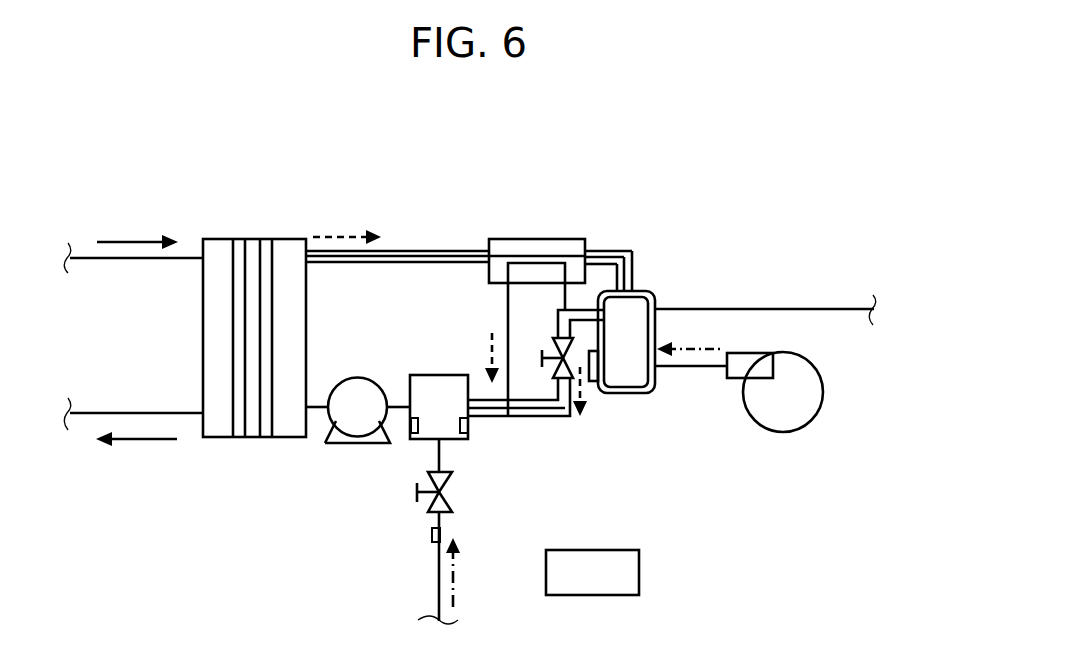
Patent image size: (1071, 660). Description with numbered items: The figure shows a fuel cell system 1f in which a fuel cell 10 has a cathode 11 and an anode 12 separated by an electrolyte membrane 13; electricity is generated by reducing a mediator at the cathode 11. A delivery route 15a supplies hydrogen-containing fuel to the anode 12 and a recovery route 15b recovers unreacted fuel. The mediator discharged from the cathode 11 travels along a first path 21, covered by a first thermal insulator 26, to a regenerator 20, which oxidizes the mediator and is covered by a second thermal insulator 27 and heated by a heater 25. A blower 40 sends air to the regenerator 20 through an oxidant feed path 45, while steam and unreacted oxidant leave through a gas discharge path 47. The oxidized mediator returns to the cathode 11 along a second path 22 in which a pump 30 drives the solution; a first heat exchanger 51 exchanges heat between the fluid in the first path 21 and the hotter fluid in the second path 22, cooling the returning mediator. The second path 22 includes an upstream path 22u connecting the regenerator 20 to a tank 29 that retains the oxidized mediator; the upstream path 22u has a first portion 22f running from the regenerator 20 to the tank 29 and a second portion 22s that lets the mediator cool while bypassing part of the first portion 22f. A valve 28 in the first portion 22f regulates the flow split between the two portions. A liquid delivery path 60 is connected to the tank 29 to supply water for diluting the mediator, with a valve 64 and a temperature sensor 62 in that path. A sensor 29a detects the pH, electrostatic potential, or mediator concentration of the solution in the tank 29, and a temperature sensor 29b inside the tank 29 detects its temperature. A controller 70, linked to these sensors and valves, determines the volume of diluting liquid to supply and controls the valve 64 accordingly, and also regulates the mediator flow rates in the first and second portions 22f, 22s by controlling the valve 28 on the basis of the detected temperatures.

The fuel cell system 1f is at (142, 166).
The fuel cell 10 is at (214, 211).
The cathode 11 is at (289, 410).
The anode 12 is at (222, 410).
The electrolyte membrane 13 is at (250, 422).
The delivery route 15a is at (95, 260).
The recovery route 15b is at (157, 412).
The regenerator 20 is at (637, 292).
The first path 21 is at (435, 250).
The second path 22 is at (482, 417).
The second portion 22s is at (513, 417).
The first portion 22f is at (558, 417).
The upstream path 22u is at (507, 490).
The heater 25 is at (595, 383).
The first thermal insulator 26 is at (385, 250).
The second thermal insulator 27 is at (650, 292).
The valve 28 is at (557, 343).
The tank 29 is at (436, 375).
The sensor 29a is at (413, 423).
The temperature sensor 29b is at (462, 425).
The pump 30 is at (363, 445).
The blower 40 is at (785, 432).
The oxidant feed path 45 is at (677, 368).
The gas discharge path 47 is at (778, 308).
The first heat exchanger 51 is at (573, 238).
The liquid delivery path 60 is at (439, 568).
The temperature sensor 62 is at (432, 535).
The valve 64 is at (443, 508).
The controller 70 is at (608, 591).